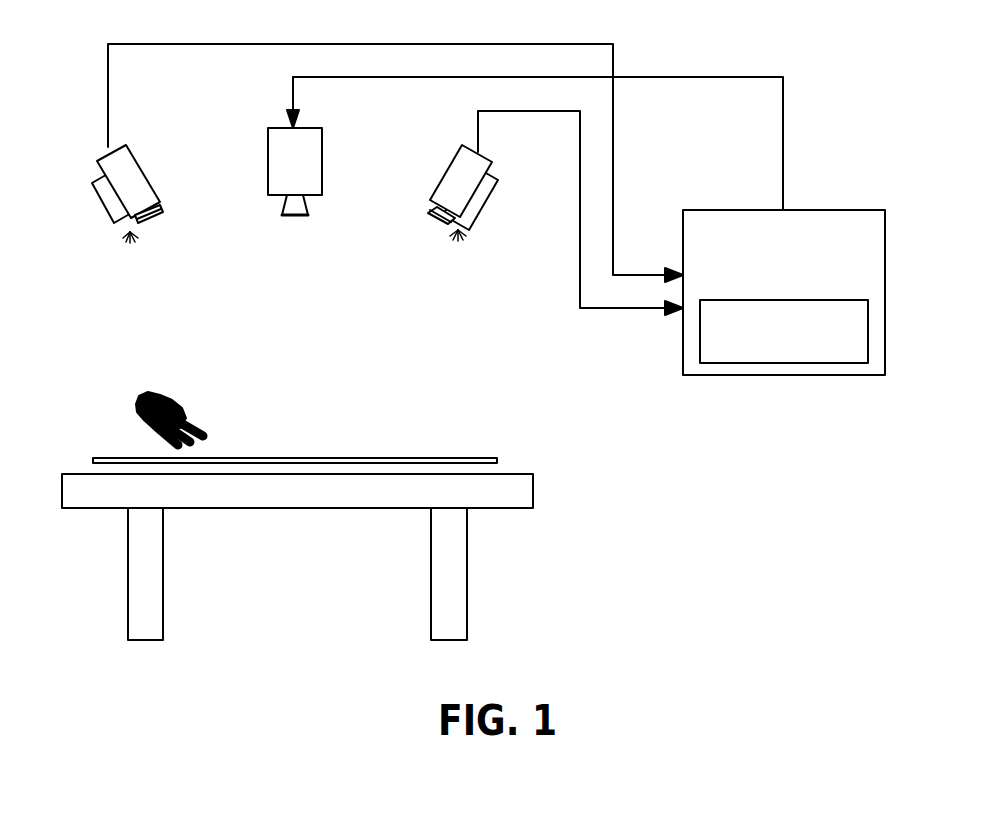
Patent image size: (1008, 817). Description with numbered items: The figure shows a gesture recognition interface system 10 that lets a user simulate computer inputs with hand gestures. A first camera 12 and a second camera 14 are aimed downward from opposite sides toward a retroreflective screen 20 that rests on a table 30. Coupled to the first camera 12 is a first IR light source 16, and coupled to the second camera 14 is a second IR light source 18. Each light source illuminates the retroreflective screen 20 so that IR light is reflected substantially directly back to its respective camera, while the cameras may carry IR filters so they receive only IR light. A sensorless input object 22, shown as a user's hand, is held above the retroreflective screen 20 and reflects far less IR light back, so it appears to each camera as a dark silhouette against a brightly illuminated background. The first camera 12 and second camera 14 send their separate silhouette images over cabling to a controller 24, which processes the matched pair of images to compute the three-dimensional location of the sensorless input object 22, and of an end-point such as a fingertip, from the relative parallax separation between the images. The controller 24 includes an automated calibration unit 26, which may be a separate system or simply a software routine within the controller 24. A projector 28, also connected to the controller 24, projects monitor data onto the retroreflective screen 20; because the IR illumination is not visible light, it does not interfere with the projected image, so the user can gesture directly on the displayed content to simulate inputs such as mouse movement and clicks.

The gesture recognition interface system 10 is at (95, 39).
The first camera 12 is at (138, 165).
The second camera 14 is at (433, 188).
The first IR light source 16 is at (108, 212).
The second IR light source 18 is at (480, 220).
The retroreflective screen 20 is at (465, 457).
The sensorless input object 22 is at (177, 405).
The controller 24 is at (837, 210).
The automated calibration unit 26 is at (783, 363).
The projector 28 is at (318, 128).
The table 30 is at (533, 480).